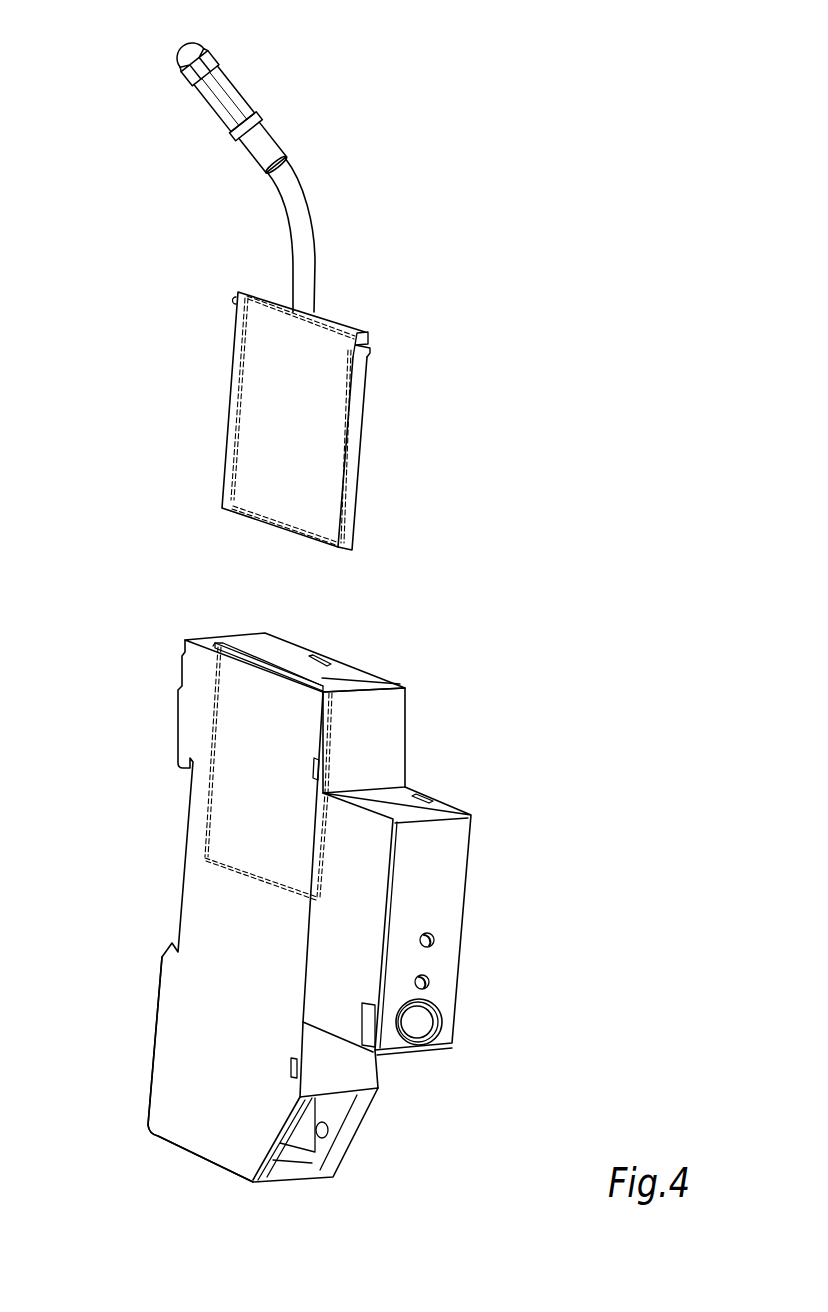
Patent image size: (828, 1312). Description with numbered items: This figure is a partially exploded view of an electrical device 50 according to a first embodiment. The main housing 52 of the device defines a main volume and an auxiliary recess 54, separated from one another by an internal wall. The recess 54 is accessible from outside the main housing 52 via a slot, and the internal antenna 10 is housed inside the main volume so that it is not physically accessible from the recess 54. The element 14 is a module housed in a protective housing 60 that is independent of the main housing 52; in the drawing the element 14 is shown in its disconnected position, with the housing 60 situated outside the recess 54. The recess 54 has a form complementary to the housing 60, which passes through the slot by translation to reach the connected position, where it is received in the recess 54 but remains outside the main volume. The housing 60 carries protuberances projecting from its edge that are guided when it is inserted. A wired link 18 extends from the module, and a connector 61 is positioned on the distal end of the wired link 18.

The connector 61 is at (237, 78).
The wired link 18 is at (295, 227).
The element 14 is at (226, 382).
The protective housing 60 is at (362, 383).
The electrical device 50 is at (540, 528).
The auxiliary recess 54 is at (290, 658).
The internal antenna 10 is at (200, 814).
The main housing 52 is at (205, 1005).